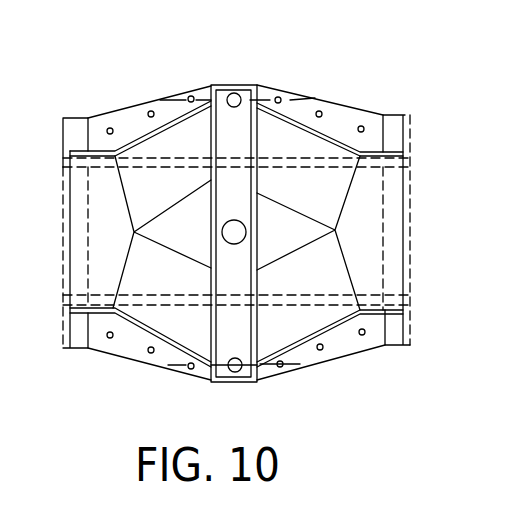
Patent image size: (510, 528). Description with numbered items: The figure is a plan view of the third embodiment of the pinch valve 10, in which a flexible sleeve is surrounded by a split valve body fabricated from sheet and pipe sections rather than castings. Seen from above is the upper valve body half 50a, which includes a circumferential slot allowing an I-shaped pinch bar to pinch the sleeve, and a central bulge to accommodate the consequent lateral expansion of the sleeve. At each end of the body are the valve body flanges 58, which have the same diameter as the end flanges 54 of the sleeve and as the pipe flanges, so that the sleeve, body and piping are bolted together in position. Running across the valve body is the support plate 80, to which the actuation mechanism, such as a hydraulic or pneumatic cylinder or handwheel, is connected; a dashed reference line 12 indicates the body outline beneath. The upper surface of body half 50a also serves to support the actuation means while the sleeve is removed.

The frame assembly 10 is at (346, 404).
The side plate 12 is at (293, 157).
The upper valve body half 50a is at (180, 198).
The end flange 54 is at (403, 188).
The valve body flange 58 is at (393, 335).
The support plate 80 is at (223, 133).